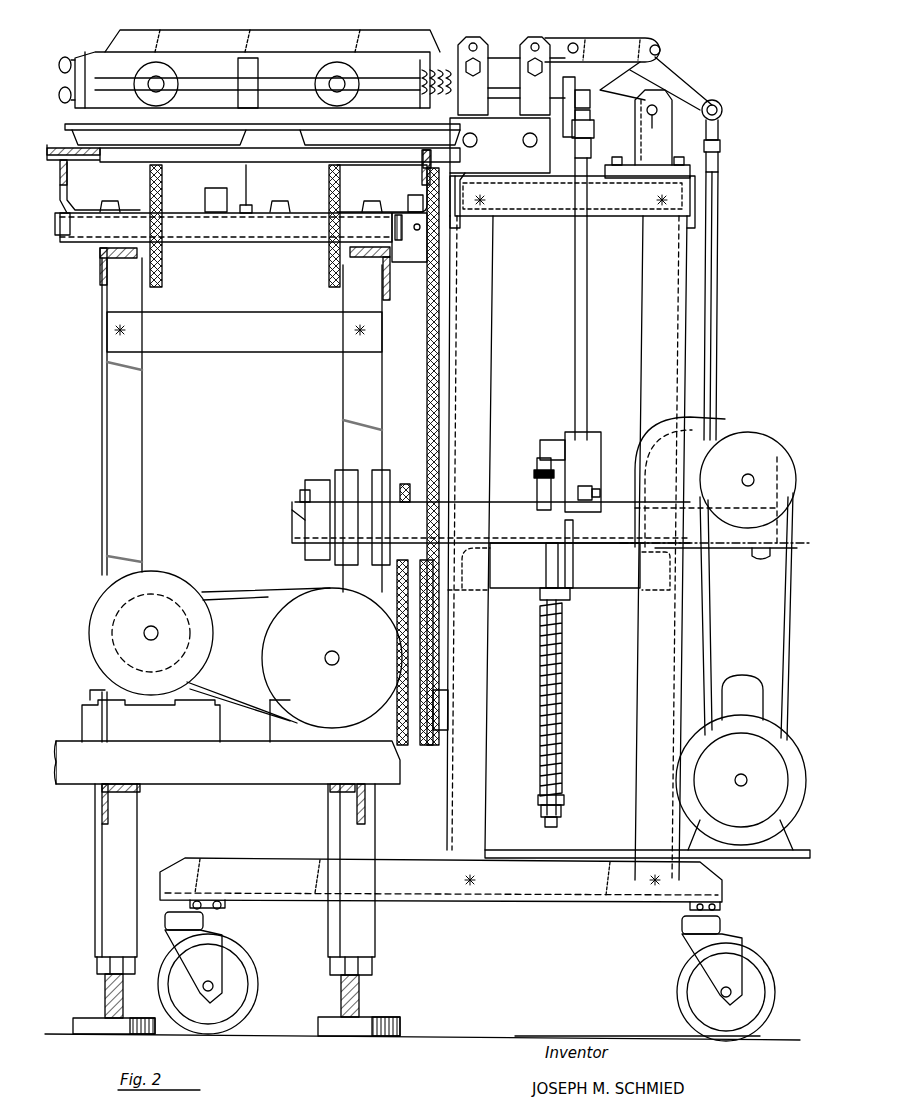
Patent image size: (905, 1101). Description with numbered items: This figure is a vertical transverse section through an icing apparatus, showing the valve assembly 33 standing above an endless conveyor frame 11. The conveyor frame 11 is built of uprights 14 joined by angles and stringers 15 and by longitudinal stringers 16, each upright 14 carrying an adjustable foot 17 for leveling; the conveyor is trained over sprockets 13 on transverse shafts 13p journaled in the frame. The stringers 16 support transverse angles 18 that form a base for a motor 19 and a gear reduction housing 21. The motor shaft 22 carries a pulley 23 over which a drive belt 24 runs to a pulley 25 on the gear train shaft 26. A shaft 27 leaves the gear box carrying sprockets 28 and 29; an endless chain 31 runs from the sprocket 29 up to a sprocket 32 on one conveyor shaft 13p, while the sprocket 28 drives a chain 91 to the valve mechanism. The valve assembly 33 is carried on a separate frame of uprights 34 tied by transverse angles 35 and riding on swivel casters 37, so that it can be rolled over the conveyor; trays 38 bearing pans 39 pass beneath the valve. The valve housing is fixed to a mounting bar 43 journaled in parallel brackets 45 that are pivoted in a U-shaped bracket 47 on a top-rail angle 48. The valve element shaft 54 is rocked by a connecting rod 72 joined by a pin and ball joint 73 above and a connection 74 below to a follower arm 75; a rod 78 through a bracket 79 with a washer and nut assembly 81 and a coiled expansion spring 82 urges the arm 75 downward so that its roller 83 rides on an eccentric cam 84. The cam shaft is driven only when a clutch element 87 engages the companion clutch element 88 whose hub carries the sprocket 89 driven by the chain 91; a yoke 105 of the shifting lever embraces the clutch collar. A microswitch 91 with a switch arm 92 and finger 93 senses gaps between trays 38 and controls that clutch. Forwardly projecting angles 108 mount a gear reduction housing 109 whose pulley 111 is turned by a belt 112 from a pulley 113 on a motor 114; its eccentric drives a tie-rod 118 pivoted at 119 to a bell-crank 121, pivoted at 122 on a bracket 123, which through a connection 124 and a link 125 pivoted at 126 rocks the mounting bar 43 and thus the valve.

The endless conveyor frame 11 is at (100, 306).
The sprockets 13 is at (340, 186).
The transverse shafts 13p is at (400, 245).
The uprights 14 is at (104, 453).
The angles / stringers 15 is at (98, 262).
The stringers 16 is at (96, 818).
The adjustable foot 17 is at (363, 1005).
The transverse angles 18 is at (268, 782).
The motor 19 is at (98, 690).
The gear reduction housing 21 is at (270, 727).
The motor shaft 22 is at (155, 636).
The pulley 23 is at (168, 600).
The drive belt 24 is at (238, 590).
The pulley 25 is at (262, 670).
The gear train shaft 26 is at (338, 656).
The shaft 27 is at (448, 712).
The sprocket 28 is at (400, 750).
The sprocket 29 is at (428, 748).
The endless chain 31 is at (426, 378).
The sprocket 32 is at (426, 298).
The valve assembly 33 is at (278, 50).
The uprights 34 is at (490, 360).
The transverse angles 35 is at (286, 868).
The swivel caster 37 is at (248, 958).
The trays 38 is at (282, 170).
The pans 39 is at (253, 154).
The mounting bar 43 is at (416, 48).
The brackets 45 is at (528, 38).
The U-shaped bracket 47 is at (510, 154).
The angle 48 is at (452, 180).
The shaft 54 is at (438, 100).
The connecting rod 72 is at (589, 278).
The pin and ball joint 73 is at (590, 133).
The connection 74 is at (600, 488).
The follower arm 75 is at (558, 448).
The rod 78 is at (568, 580).
The bracket 79 is at (570, 600).
The washer and nut assembly 81 is at (562, 806).
The coiled expansion spring 82 is at (564, 748).
The roller 83 is at (536, 476).
The eccentric cam 84 is at (540, 568).
The clutch element 87 is at (348, 480).
The companion clutch element 88 is at (386, 470).
The sprocket 89 is at (407, 483).
The chain / microswitch 91 is at (453, 632).
The switch arm 92 is at (257, 207).
The finger 93 is at (246, 188).
The yoke 105 is at (312, 492).
The forwardly projecting angles 108 is at (735, 543).
The gear reduction housing 109 is at (724, 432).
The pulley 111 is at (778, 450).
The belt 112 is at (792, 594).
The pulley 113 is at (780, 760).
The motor 114 is at (792, 815).
The tie-rod 118 is at (719, 304).
The pivotal connection 119 is at (722, 108).
The bell-crank 121 is at (690, 80).
The pivot 122 is at (653, 127).
The bracket 123 is at (634, 130).
The connection 124 is at (662, 48).
The link 125 is at (623, 42).
The pivot 126 is at (575, 42).